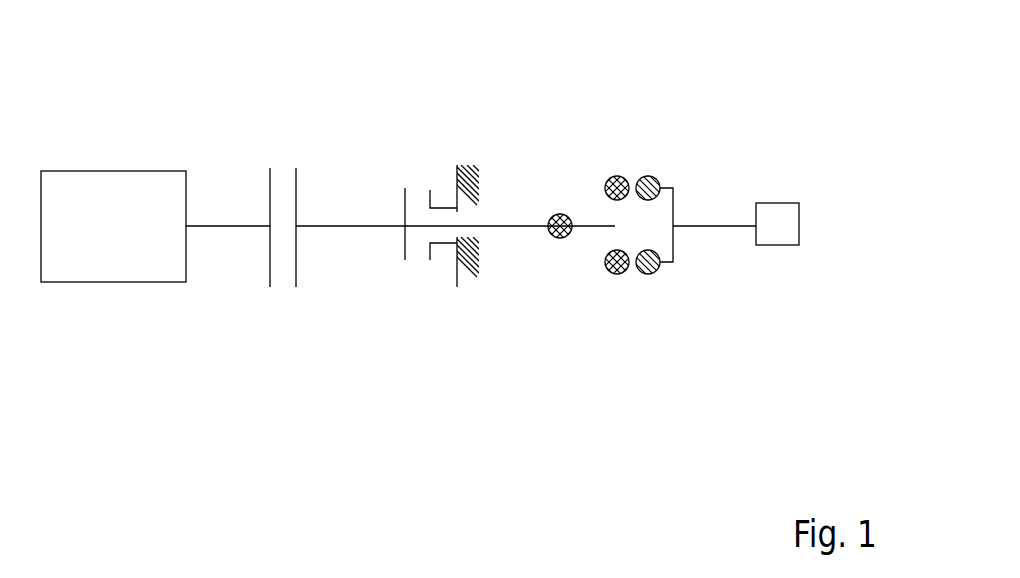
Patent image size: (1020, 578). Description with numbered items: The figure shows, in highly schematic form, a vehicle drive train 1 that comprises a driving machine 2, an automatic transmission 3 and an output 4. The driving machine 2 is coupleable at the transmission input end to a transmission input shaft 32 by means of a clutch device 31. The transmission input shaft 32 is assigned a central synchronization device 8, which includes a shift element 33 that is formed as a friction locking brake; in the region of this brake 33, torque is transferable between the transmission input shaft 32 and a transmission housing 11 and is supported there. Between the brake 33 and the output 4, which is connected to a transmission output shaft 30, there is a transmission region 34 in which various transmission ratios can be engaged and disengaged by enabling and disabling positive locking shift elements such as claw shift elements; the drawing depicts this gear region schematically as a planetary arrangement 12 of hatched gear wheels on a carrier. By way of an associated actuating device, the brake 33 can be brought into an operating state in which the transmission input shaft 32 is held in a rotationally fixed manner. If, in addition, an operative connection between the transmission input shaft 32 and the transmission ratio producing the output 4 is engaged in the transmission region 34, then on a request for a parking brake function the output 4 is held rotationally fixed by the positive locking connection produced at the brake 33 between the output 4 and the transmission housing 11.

The vehicle drive train 1 is at (152, 152).
The driving machine 2 is at (127, 238).
The automatic transmission 3 is at (568, 303).
The output 4 is at (775, 233).
The central synchronization device 8 is at (441, 168).
The transmission housing 11 is at (477, 177).
The planetary gear set 12 is at (667, 264).
The transmission output shaft 30 is at (713, 226).
The clutch device 31 is at (283, 288).
The transmission input shaft 32 is at (348, 224).
The shift element (friction locking brake) 33 is at (430, 253).
The transmission region 34 is at (636, 280).